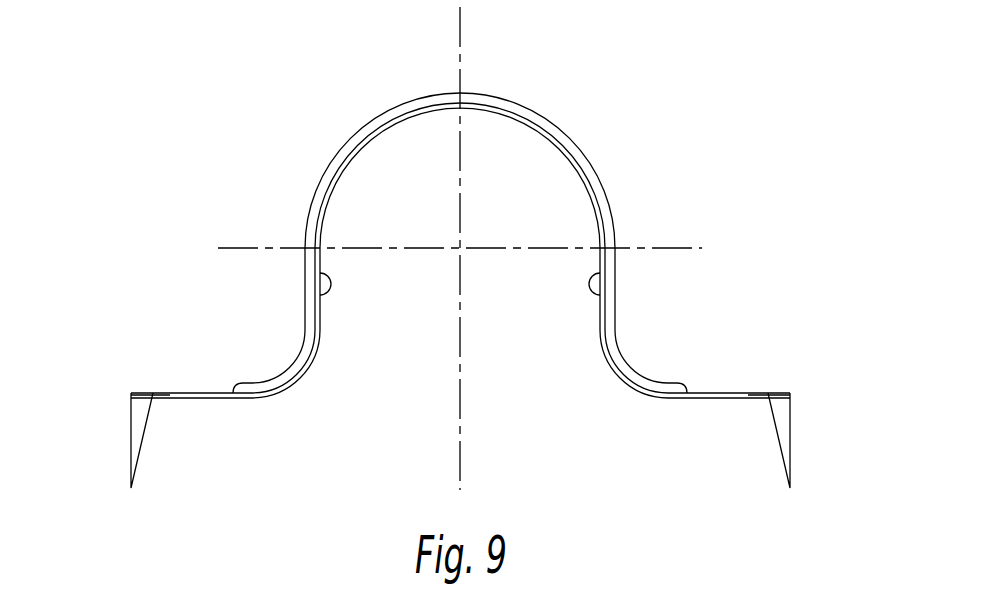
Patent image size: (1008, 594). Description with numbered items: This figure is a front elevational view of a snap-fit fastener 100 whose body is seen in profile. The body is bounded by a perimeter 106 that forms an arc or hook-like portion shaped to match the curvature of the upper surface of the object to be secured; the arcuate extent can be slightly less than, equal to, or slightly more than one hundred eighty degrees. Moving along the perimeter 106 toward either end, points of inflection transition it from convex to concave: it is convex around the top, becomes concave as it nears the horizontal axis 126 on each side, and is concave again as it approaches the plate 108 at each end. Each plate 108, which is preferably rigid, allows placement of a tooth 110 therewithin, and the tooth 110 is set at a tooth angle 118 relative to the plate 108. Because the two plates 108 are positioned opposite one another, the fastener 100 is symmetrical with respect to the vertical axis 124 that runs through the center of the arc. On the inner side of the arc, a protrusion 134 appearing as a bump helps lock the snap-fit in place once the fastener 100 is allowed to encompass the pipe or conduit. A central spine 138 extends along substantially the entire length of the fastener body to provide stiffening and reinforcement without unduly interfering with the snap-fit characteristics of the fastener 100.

The fastener 100 is at (462, 248).
The perimeter 106 is at (497, 108).
The plate 108 is at (190, 393).
The tooth 110 is at (120, 433).
The tooth angle 118 is at (147, 438).
The vertical axis 124 is at (459, 34).
The horizontal axis 126 is at (238, 247).
The protrusion 134 is at (331, 284).
The central spine 138 is at (597, 186).